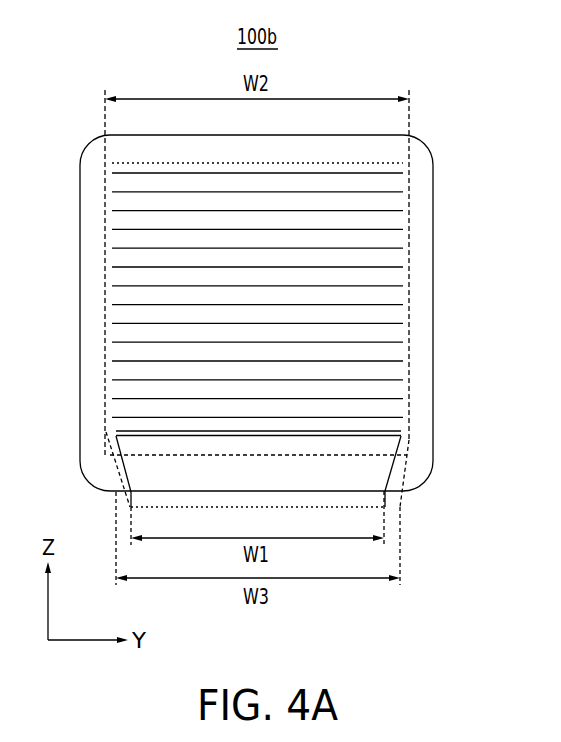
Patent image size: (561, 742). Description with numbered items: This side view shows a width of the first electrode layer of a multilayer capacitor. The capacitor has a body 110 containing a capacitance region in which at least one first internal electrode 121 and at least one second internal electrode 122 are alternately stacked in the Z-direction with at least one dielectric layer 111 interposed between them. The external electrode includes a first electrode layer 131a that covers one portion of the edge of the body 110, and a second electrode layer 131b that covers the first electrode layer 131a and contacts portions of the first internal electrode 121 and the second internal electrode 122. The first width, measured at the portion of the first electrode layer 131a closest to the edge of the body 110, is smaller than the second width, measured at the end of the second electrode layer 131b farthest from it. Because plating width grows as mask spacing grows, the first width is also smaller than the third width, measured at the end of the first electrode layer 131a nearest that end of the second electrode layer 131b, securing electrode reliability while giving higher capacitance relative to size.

The body 110 is at (420, 312).
The dielectric layer 111 is at (118, 179).
The first internal electrode 121 is at (122, 192).
The second internal electrode 122 is at (112, 163).
The first electrode layer 131a is at (372, 470).
The second electrode layer 131b is at (410, 257).